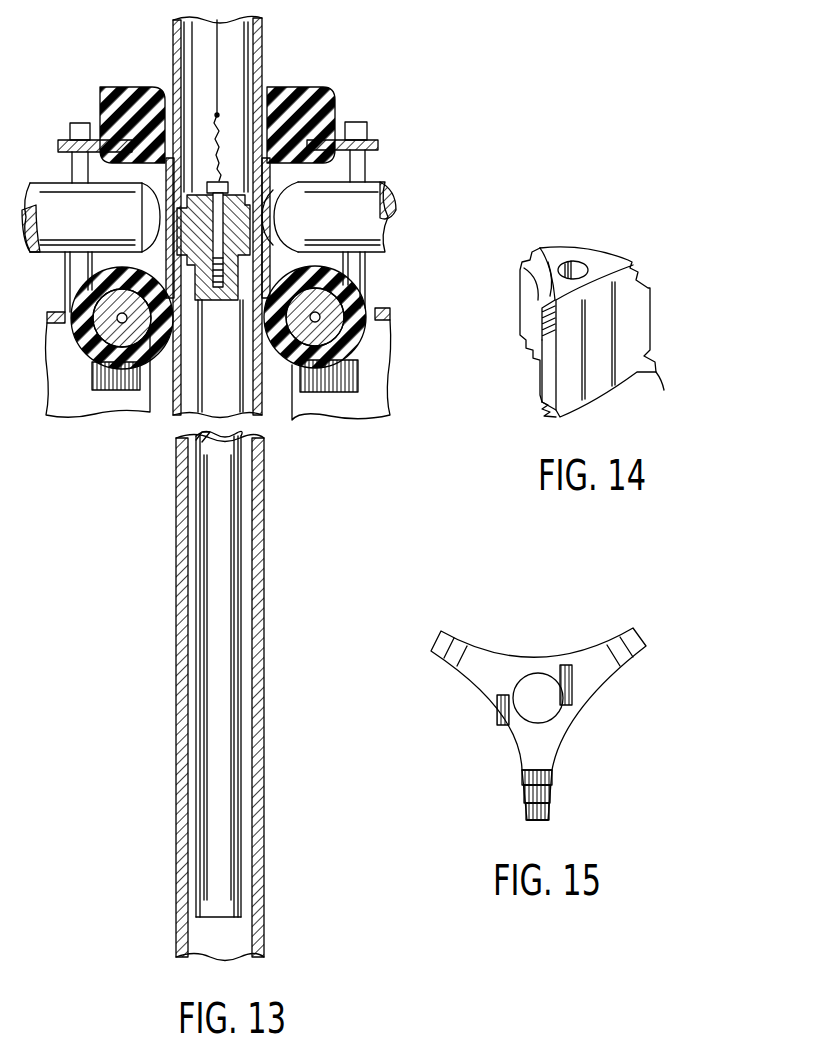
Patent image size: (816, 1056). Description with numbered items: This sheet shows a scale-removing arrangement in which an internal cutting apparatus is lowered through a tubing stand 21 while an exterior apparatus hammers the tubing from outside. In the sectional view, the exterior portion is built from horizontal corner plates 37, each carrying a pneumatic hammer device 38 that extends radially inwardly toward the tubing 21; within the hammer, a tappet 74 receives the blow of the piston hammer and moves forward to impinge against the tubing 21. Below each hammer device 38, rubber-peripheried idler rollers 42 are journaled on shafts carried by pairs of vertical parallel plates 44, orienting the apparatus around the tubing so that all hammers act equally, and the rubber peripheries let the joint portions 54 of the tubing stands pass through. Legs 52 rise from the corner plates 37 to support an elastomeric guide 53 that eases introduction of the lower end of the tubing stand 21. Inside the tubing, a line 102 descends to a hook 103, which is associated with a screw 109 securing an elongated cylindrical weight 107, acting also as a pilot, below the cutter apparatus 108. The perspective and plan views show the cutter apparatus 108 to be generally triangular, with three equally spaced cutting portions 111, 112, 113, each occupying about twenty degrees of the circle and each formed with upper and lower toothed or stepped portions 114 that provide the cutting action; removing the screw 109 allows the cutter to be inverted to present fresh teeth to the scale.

In FIG. 13, the tubing 21 is at (264, 682).
In FIG. 13, the corner plate 37 is at (386, 308).
In FIG. 13, the pneumatic hammer device 38 is at (395, 181).
In FIG. 13, the upper idler roller 42 is at (85, 352).
In FIG. 13, the vertical plate 44 is at (125, 415).
In FIG. 13, the leg 52 is at (372, 160).
In FIG. 13, the guide 53 is at (334, 95).
In FIG. 13, the joint portion 54 is at (268, 188).
In FIG. 13, the tappet 74 is at (158, 216).
In FIG. 13, the line 102 is at (220, 65).
In FIG. 13, the hook 103 is at (222, 155).
In FIG. 13, the cylindrical weight 107 is at (225, 582).
In FIG. 13, the cutter apparatus 108 is at (244, 234).
In FIG. 14, the cutter apparatus 108 is at (656, 305).
In FIG. 15, the cutter apparatus 108 is at (616, 713).
In FIG. 13, the screw 109 is at (212, 208).
In FIG. 15, the cutting portion 111 is at (642, 630).
In FIG. 14, the cutting portion 112 is at (562, 370).
In FIG. 15, the cutting portion 112 is at (540, 822).
In FIG. 14, the cutting portion 113 is at (522, 300).
In FIG. 15, the cutting portion 113 is at (434, 628).
In FIG. 13, the toothed or stepped portion 114 is at (250, 183).
In FIG. 14, the toothed or stepped portion 114 is at (644, 286).
In FIG. 15, the toothed or stepped portion 114 is at (458, 640).